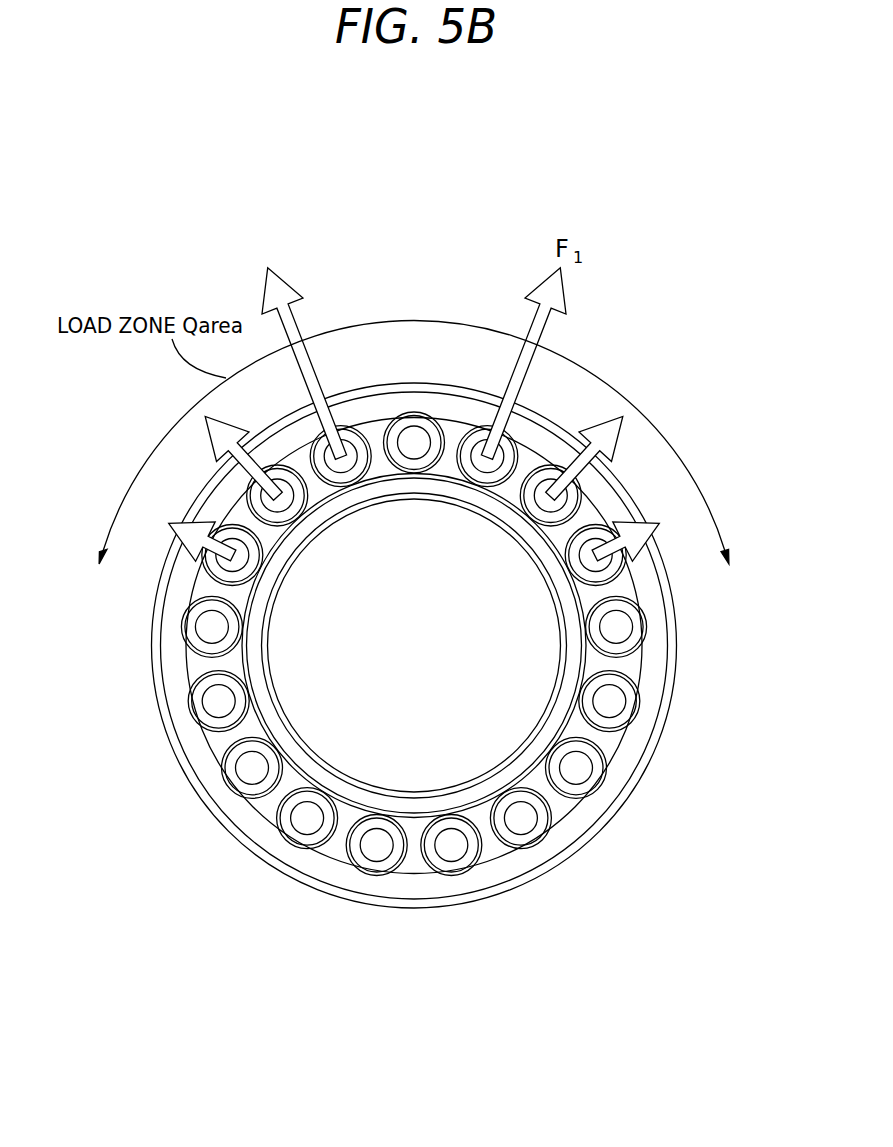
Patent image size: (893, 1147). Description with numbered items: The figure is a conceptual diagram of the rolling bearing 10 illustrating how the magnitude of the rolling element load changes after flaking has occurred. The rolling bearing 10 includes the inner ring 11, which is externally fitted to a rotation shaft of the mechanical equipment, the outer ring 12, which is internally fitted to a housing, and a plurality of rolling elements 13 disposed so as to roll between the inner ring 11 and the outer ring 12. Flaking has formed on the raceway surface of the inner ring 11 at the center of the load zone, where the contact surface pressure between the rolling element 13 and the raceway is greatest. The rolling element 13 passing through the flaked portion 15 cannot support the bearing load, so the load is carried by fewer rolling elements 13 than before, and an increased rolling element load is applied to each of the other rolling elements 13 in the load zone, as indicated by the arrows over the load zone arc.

The rolling bearing 10 is at (434, 685).
The inner ring 11 is at (416, 808).
The outer ring 12 is at (482, 882).
The rolling elements 13 is at (250, 778).
The flaked portion 15 is at (425, 467).